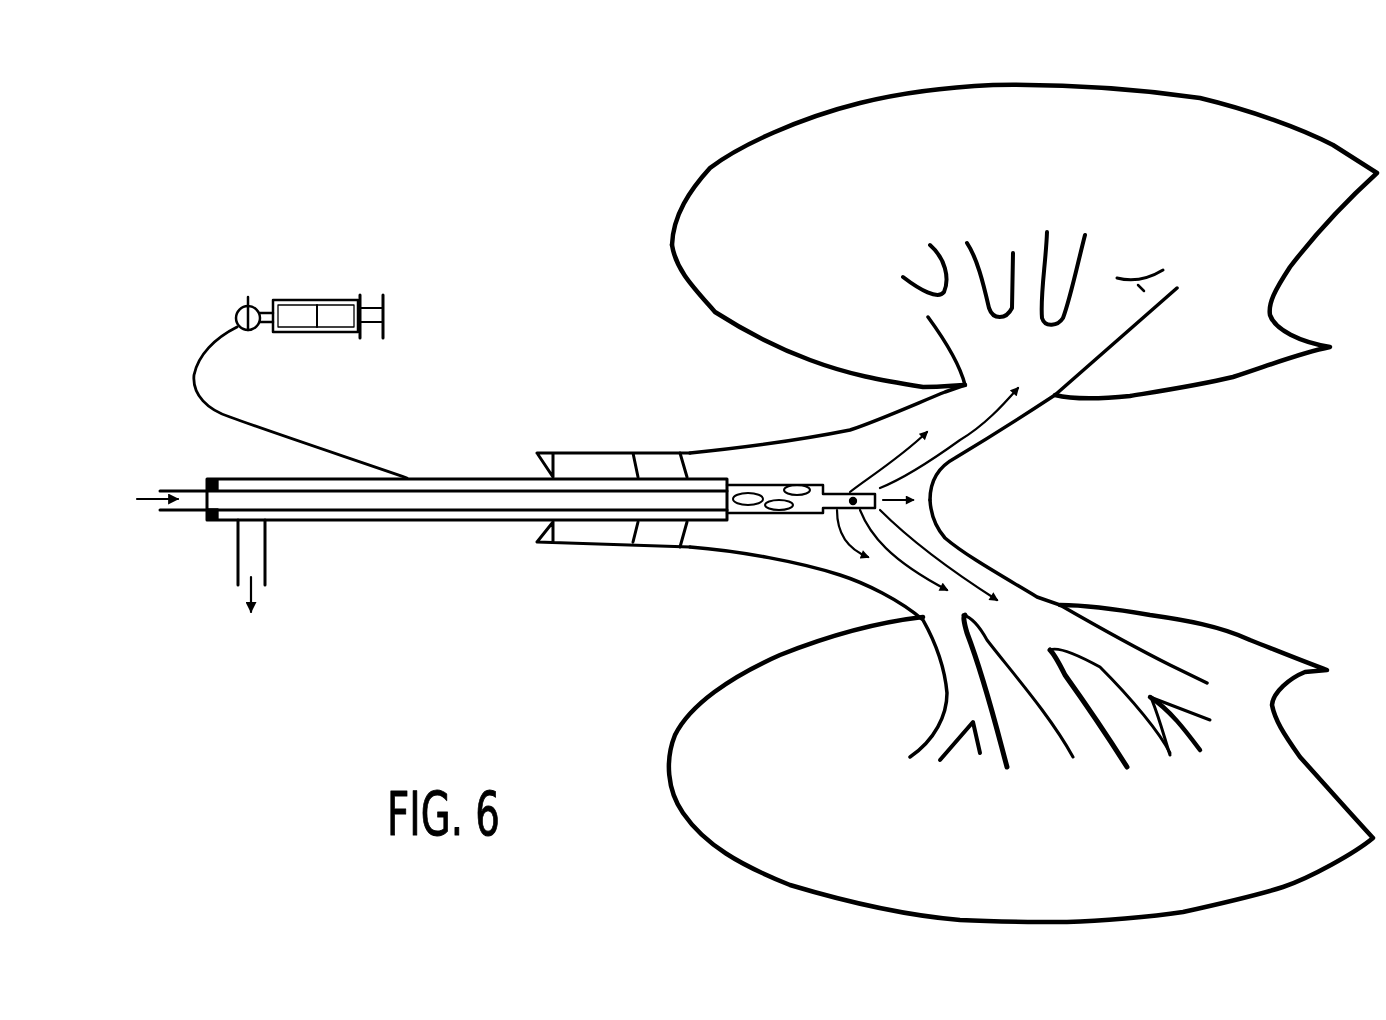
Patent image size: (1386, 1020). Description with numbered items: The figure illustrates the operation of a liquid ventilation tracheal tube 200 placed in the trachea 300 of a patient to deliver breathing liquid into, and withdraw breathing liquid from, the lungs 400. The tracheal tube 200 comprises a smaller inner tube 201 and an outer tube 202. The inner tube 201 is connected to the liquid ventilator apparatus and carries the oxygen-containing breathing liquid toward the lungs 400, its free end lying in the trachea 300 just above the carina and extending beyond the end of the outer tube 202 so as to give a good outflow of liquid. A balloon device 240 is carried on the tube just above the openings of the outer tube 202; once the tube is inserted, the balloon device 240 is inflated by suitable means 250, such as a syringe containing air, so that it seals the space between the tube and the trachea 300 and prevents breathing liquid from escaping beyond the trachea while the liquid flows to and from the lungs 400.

The liquid ventilation tracheal tube 200 is at (506, 418).
The inner tube 201 is at (342, 512).
The outer tube 202 is at (403, 520).
The balloon device 240 is at (665, 545).
The inflation means 250 is at (309, 298).
The trachea 300 is at (627, 452).
The lungs 400 is at (1227, 382).